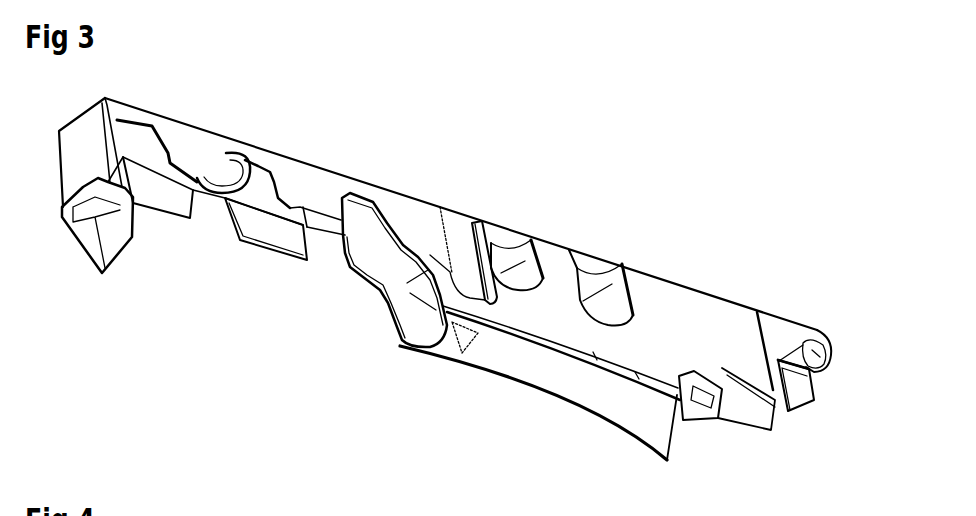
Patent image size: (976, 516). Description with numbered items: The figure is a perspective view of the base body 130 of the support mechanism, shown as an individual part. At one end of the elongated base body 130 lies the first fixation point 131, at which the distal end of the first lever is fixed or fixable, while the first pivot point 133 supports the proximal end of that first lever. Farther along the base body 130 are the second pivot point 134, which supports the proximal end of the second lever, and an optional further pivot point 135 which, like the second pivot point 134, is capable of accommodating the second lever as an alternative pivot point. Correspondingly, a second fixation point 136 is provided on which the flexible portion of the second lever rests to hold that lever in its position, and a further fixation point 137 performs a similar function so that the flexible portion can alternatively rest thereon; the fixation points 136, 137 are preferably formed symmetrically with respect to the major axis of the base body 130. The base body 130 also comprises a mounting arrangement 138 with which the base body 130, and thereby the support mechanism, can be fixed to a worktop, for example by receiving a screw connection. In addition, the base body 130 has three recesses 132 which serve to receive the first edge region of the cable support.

The base body 130 is at (704, 165).
The first fixation point 131 is at (101, 272).
The recesses 132 is at (155, 166).
The first pivot point 133 is at (433, 320).
The second pivot point 134 is at (601, 283).
The further pivot point 135 is at (519, 248).
The second fixation point 136 is at (801, 396).
The further fixation point 137 is at (698, 420).
The mounting arrangement 138 is at (247, 167).